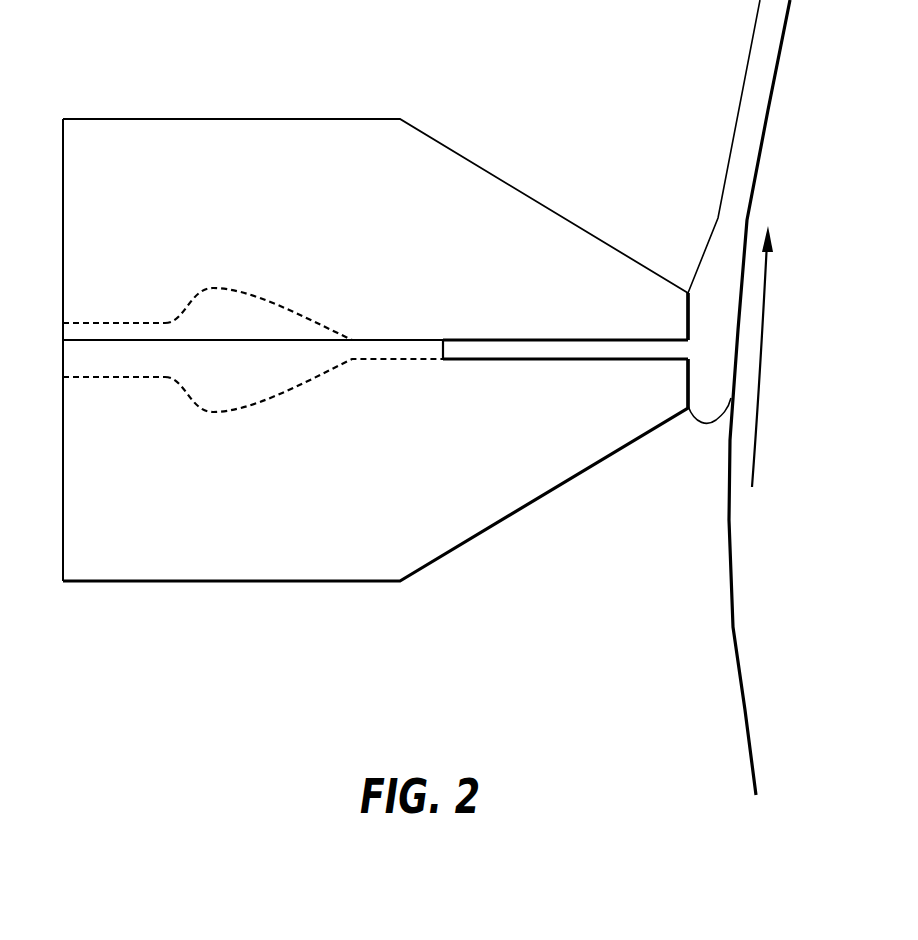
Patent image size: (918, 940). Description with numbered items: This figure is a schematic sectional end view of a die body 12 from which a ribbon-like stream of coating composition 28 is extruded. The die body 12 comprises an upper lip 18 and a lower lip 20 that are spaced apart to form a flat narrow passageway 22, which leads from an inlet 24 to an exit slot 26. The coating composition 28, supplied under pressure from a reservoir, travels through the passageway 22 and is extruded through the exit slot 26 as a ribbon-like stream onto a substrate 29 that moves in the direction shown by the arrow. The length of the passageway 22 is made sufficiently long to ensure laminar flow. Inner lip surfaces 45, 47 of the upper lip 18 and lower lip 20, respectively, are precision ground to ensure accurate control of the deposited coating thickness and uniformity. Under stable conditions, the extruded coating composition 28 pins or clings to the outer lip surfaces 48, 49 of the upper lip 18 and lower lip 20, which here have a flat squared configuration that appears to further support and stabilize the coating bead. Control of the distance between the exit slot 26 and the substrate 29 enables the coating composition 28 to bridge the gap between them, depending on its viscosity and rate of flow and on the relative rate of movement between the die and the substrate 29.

The die body 12 is at (345, 102).
The upper lip 18 is at (153, 119).
The lower lip 20 is at (172, 582).
The passageway 22 is at (393, 345).
The inlet 24 is at (82, 357).
The exit slot 26 is at (673, 350).
The coating composition 28 is at (717, 218).
The substrate 29 is at (733, 627).
The inner lip surface 45 is at (522, 340).
The inner lip surface 47 is at (528, 360).
The outer lip surface 48 is at (688, 315).
The outer lip surface 49 is at (685, 382).